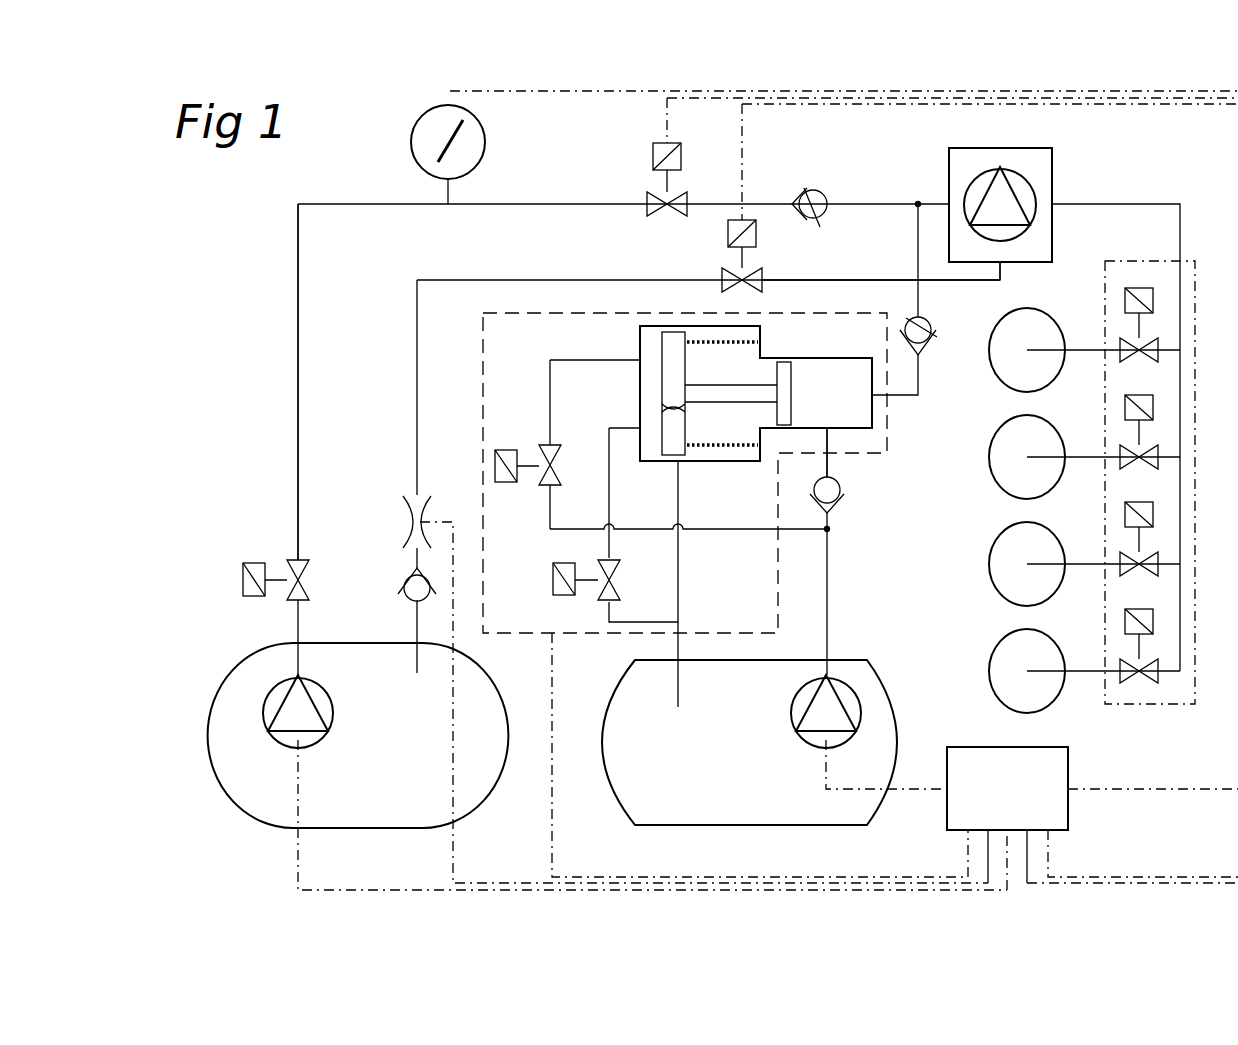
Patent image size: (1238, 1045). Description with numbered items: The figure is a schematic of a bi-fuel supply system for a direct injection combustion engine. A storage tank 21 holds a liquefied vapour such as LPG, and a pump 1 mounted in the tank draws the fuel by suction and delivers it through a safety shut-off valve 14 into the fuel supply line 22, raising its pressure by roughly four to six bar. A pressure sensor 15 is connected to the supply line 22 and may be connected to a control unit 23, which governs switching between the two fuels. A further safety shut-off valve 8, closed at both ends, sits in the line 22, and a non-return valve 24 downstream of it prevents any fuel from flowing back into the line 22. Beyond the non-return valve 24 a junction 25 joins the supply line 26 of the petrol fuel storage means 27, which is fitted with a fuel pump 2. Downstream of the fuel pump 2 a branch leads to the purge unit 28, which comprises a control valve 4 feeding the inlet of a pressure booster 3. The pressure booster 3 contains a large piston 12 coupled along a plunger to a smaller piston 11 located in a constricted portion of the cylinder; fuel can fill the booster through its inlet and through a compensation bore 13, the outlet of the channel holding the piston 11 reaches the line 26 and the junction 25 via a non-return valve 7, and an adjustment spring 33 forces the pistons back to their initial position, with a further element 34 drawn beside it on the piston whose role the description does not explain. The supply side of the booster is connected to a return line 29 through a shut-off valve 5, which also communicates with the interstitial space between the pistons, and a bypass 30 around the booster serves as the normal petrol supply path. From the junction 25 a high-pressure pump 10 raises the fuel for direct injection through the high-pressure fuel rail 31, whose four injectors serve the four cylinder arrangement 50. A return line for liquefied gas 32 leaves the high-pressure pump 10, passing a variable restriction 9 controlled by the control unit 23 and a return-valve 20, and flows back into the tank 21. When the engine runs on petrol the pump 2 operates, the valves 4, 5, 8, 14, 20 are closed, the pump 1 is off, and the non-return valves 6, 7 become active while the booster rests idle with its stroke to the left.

The pump 1 is at (305, 702).
The fuel pump 2 is at (842, 696).
The pressure booster 3 is at (735, 410).
The control valve 4 is at (545, 462).
The shut-off valve 5 is at (614, 584).
The non-return valve 6 is at (822, 490).
The non-return valve 7 is at (925, 322).
The safety shut-off valve 8 is at (648, 195).
The restriction 9 is at (408, 522).
The high-pressure pump 10 is at (1010, 196).
The piston 11 is at (790, 382).
The piston 12 is at (672, 350).
The compensation bore 13 is at (672, 418).
The safety shut-off valve 14 is at (302, 570).
The pressure sensor 15 is at (432, 136).
The return-valve 20 is at (722, 275).
The storage tank 21 is at (240, 678).
The fuel supply line 22 is at (296, 392).
The control unit 23 is at (1062, 812).
The non-return valve 24 is at (815, 192).
The junction 25 is at (918, 200).
The supply line 26 is at (918, 258).
The petrol fuel storage means 27 is at (677, 775).
The purge unit 28 is at (505, 320).
The return line 29 is at (611, 462).
The bypass 30 is at (832, 462).
The high-pressure fuel rail 31 is at (1155, 715).
The return line for liquefied gas 32 is at (830, 278).
The adjustment spring 33 is at (746, 443).
The seal 34 is at (715, 442).
The four cylinder arrangement 50 is at (1005, 440).